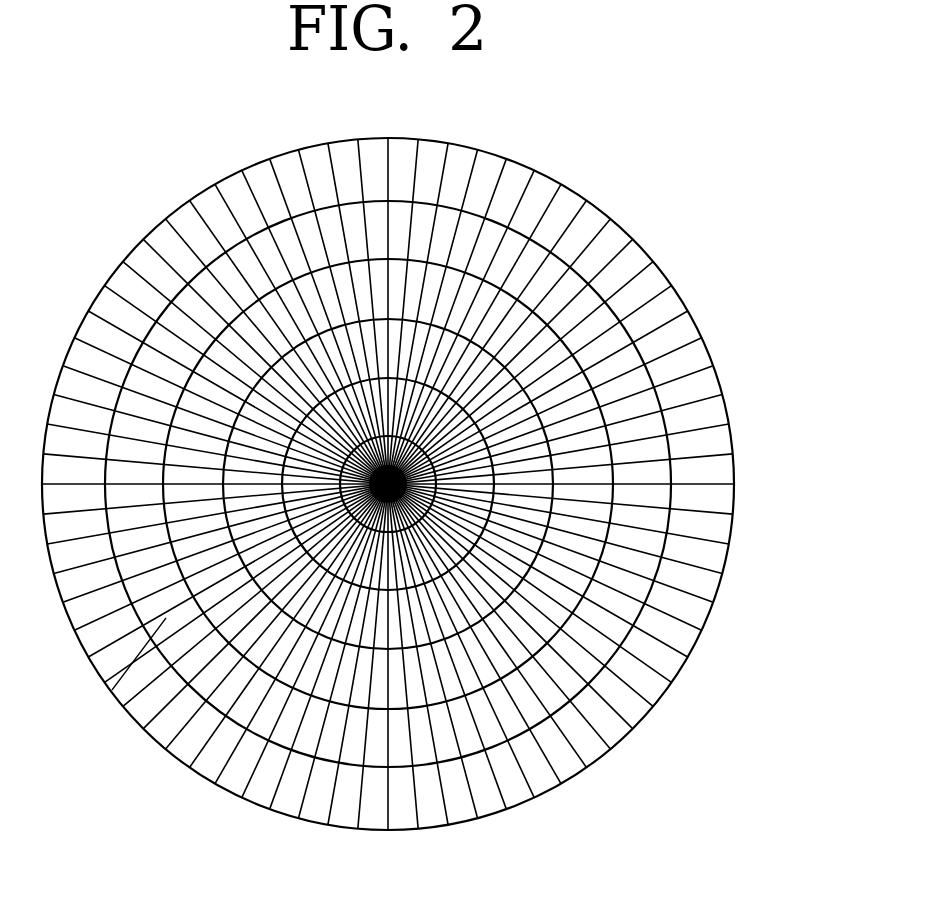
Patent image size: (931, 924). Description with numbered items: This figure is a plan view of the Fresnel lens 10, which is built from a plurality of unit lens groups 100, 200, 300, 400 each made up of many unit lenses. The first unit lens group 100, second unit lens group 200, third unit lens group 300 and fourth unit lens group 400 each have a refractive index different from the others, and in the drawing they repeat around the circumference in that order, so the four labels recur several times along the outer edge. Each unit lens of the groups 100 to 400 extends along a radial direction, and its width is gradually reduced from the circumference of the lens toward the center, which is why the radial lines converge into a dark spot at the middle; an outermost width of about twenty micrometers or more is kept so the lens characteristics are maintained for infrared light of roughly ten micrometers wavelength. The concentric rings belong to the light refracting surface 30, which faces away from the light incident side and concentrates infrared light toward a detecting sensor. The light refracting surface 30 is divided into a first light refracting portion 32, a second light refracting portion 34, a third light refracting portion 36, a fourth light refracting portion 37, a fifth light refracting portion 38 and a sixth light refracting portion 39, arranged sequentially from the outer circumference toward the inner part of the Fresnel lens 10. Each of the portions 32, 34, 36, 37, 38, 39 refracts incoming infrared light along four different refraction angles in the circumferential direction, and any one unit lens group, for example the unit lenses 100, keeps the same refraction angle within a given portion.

The Fresnel lens 10 is at (183, 153).
The light refracting surface 30 is at (795, 237).
The first light refracting portion 32 is at (623, 265).
The second light refracting portion 34 is at (597, 326).
The third light refracting portion 36 is at (550, 380).
The fourth light refracting portion 37 is at (510, 420).
The fifth light refracting portion 38 is at (467, 453).
The sixth light refracting portion 39 is at (417, 480).
The first unit lens group 100 is at (112, 690).
The second unit lens group 200 is at (137, 715).
The third unit lens group 300 is at (160, 733).
The fourth unit lens group 400 is at (182, 758).